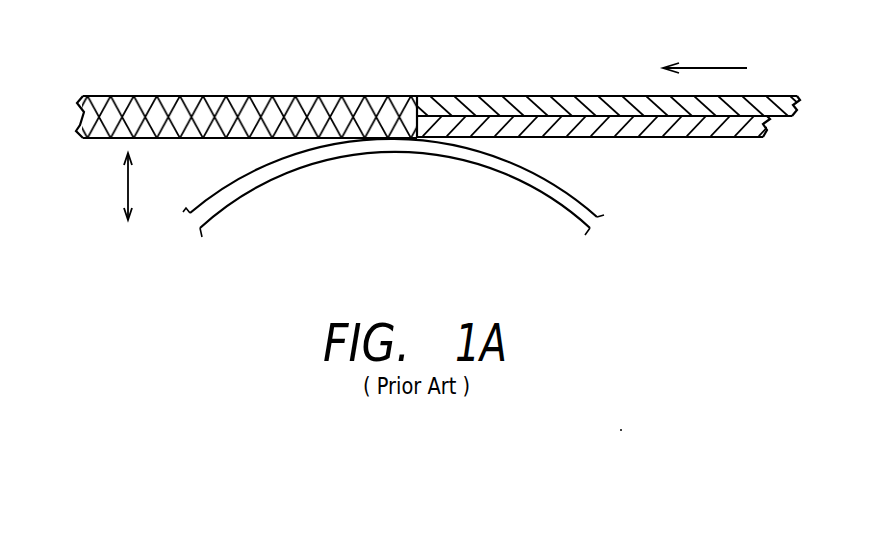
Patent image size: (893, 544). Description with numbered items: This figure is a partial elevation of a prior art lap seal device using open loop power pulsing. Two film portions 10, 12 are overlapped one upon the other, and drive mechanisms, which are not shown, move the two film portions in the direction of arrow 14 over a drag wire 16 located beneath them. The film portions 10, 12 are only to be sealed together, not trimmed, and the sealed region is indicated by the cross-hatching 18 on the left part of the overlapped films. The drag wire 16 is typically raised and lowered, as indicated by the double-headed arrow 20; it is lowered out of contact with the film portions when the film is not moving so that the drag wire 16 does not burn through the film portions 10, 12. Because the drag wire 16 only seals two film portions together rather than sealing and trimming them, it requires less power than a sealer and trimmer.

The film portion 10 is at (488, 96).
The film portion 12 is at (627, 138).
The arrow 14 is at (702, 67).
The drag wire 16 is at (267, 187).
The cross-hatching 18 is at (183, 96).
The arrow 20 is at (127, 187).